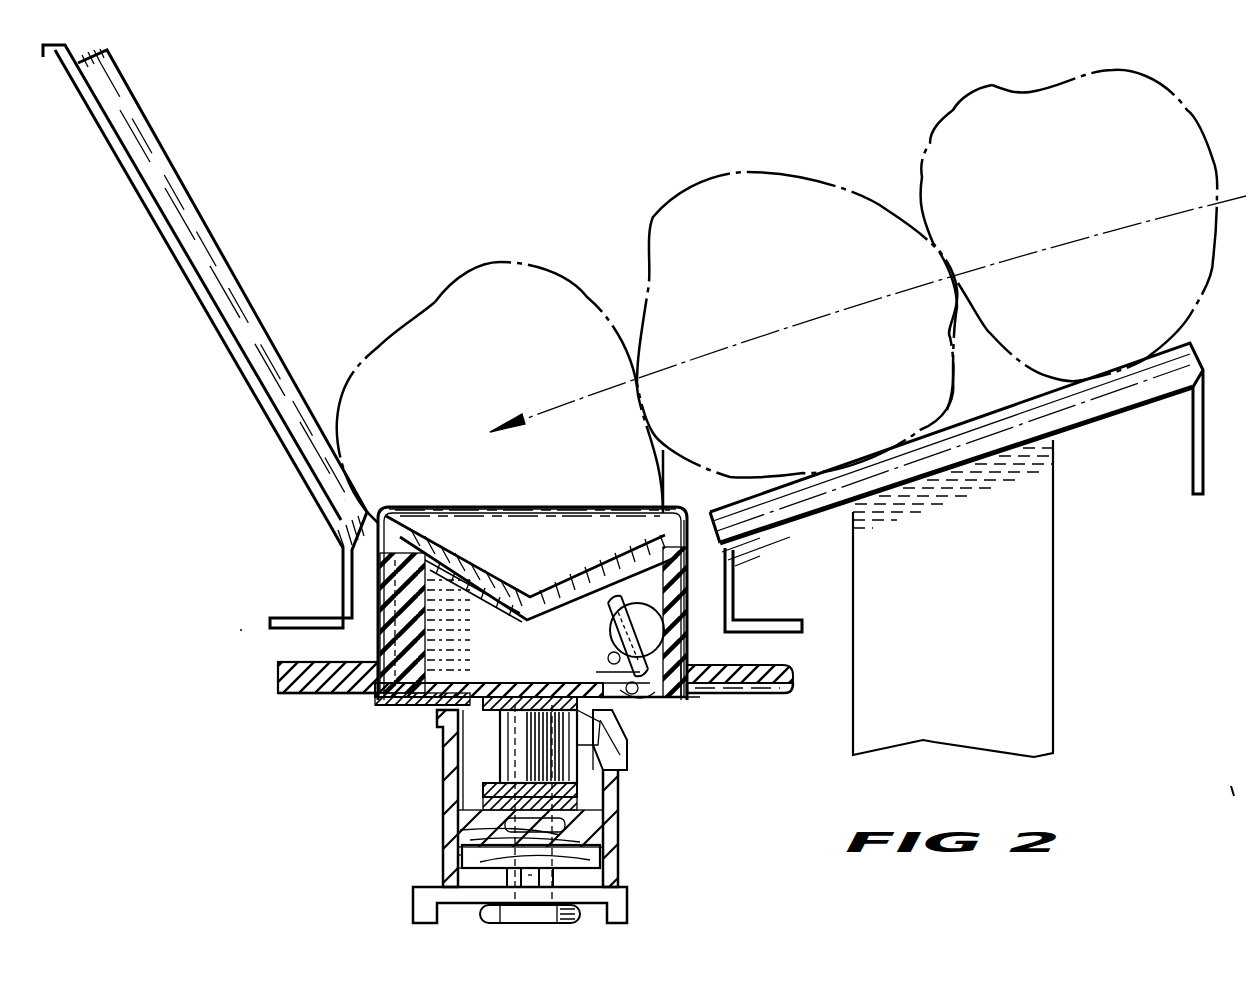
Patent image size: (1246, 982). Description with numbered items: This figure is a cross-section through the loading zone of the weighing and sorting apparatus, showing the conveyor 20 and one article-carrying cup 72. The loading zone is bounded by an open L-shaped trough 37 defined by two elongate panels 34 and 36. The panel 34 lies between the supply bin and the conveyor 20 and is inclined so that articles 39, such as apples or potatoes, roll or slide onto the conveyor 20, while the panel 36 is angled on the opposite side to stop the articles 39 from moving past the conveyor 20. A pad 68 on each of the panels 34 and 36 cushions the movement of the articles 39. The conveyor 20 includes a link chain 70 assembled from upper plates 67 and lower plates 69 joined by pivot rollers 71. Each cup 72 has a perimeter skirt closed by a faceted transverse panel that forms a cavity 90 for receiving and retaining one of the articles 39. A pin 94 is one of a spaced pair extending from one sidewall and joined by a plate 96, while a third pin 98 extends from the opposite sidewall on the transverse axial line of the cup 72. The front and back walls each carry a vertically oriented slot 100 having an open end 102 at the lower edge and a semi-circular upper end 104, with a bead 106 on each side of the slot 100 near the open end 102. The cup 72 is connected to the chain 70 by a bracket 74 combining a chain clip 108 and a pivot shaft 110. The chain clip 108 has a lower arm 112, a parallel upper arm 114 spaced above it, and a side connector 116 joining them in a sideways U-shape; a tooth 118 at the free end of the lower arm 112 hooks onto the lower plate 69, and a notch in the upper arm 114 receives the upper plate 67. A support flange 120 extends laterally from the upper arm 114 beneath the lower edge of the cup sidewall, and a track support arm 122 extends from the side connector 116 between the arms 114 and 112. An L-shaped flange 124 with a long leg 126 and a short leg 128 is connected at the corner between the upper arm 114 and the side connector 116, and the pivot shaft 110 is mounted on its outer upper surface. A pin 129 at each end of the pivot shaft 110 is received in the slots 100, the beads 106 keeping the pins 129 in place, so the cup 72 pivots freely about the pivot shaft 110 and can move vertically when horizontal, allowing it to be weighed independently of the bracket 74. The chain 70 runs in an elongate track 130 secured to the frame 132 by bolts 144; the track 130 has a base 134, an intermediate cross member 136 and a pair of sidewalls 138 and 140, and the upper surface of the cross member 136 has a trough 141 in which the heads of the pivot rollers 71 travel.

The conveyor 20 is at (233, 612).
The elongate panel 34 is at (1098, 425).
The elongate panel 36 is at (160, 234).
The open L-shape trough 37 is at (540, 164).
The articles 39 is at (650, 306).
The upper plates 67 is at (583, 690).
The pad 68 is at (262, 340).
The lower plates 69 is at (580, 790).
The link chain 70 is at (500, 738).
The pivot rollers 71 is at (500, 757).
The cup 72 is at (270, 656).
The bracket 74 is at (375, 707).
The cavity 90 is at (530, 590).
The pin 94 is at (767, 695).
The plate 96 is at (773, 670).
The third pin 98 is at (322, 692).
The slot 100 is at (685, 610).
The open end 102 is at (688, 657).
The upper end 104 is at (685, 590).
The bead 106 is at (686, 632).
The chain clip 108 is at (646, 697).
The pivot shaft 110 is at (635, 606).
The lower arm 112 is at (450, 823).
The upper arm 114 is at (557, 688).
The side connector 116 is at (632, 695).
The tooth 118 is at (482, 792).
The support flange 120 is at (415, 706).
The track support arm 122 is at (632, 742).
The L-shaped flange 124 is at (586, 615).
The long leg 126 is at (607, 658).
The short leg 128 is at (624, 656).
The pin 129 is at (620, 614).
The track 130 is at (600, 878).
The frame 132 is at (620, 900).
The base 134 is at (607, 847).
The intermediate cross member 136 is at (610, 825).
The sidewall 138 is at (617, 763).
The sidewall 140 is at (450, 798).
The trough 141 is at (515, 690).
The bolts 144 is at (453, 870).